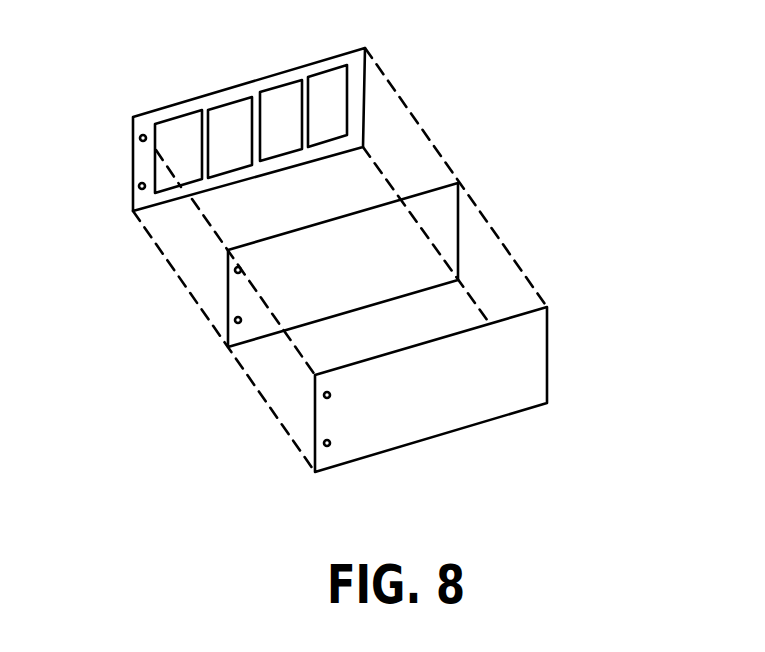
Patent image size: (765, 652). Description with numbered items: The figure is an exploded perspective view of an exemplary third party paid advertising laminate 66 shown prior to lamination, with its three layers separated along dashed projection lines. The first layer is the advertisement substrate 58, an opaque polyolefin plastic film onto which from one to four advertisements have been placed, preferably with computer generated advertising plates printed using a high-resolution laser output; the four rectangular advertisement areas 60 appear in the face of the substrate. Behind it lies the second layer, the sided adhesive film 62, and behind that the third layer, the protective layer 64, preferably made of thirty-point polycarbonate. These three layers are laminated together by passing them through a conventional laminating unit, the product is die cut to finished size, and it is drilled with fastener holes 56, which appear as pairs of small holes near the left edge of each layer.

The fastener holes 56 is at (140, 138).
The advertisement substrate 58 is at (365, 105).
The windows / openings 60 is at (327, 87).
The sided adhesive film 62 is at (458, 246).
The protective layer 64 is at (548, 373).
The advertising laminate 66 is at (468, 13).